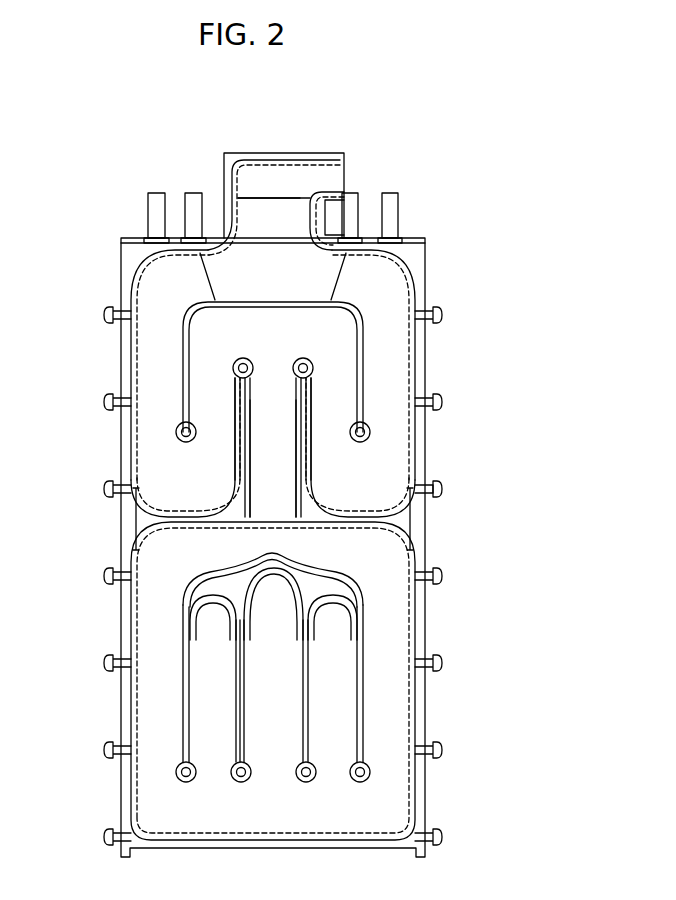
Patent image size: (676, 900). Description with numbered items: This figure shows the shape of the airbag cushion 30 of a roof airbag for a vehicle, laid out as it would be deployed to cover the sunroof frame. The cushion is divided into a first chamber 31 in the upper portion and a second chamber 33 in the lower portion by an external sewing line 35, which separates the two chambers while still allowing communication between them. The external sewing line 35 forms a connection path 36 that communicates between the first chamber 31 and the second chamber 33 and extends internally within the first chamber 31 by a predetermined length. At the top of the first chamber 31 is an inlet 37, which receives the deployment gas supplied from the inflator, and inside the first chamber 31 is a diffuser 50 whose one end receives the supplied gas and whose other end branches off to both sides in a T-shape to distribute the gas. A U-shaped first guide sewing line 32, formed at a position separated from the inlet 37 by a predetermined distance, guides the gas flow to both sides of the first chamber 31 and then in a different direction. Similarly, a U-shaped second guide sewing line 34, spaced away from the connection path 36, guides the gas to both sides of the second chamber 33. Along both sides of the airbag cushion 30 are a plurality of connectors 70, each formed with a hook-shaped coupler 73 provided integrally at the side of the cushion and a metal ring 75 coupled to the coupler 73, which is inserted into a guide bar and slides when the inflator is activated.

The airbag cushion 30 is at (450, 127).
The first chamber 31 is at (131, 352).
The first guide sewing line 32 is at (365, 335).
The second chamber 33 is at (131, 680).
The second guide sewing line 34 is at (362, 703).
The external sewing line 35 is at (312, 414).
The connection path 36 is at (276, 436).
The inlet 37 is at (276, 180).
The diffuser 50 is at (300, 198).
The connector 70 is at (328, 576).
The coupler 73 is at (437, 492).
The ring 75 is at (437, 488).